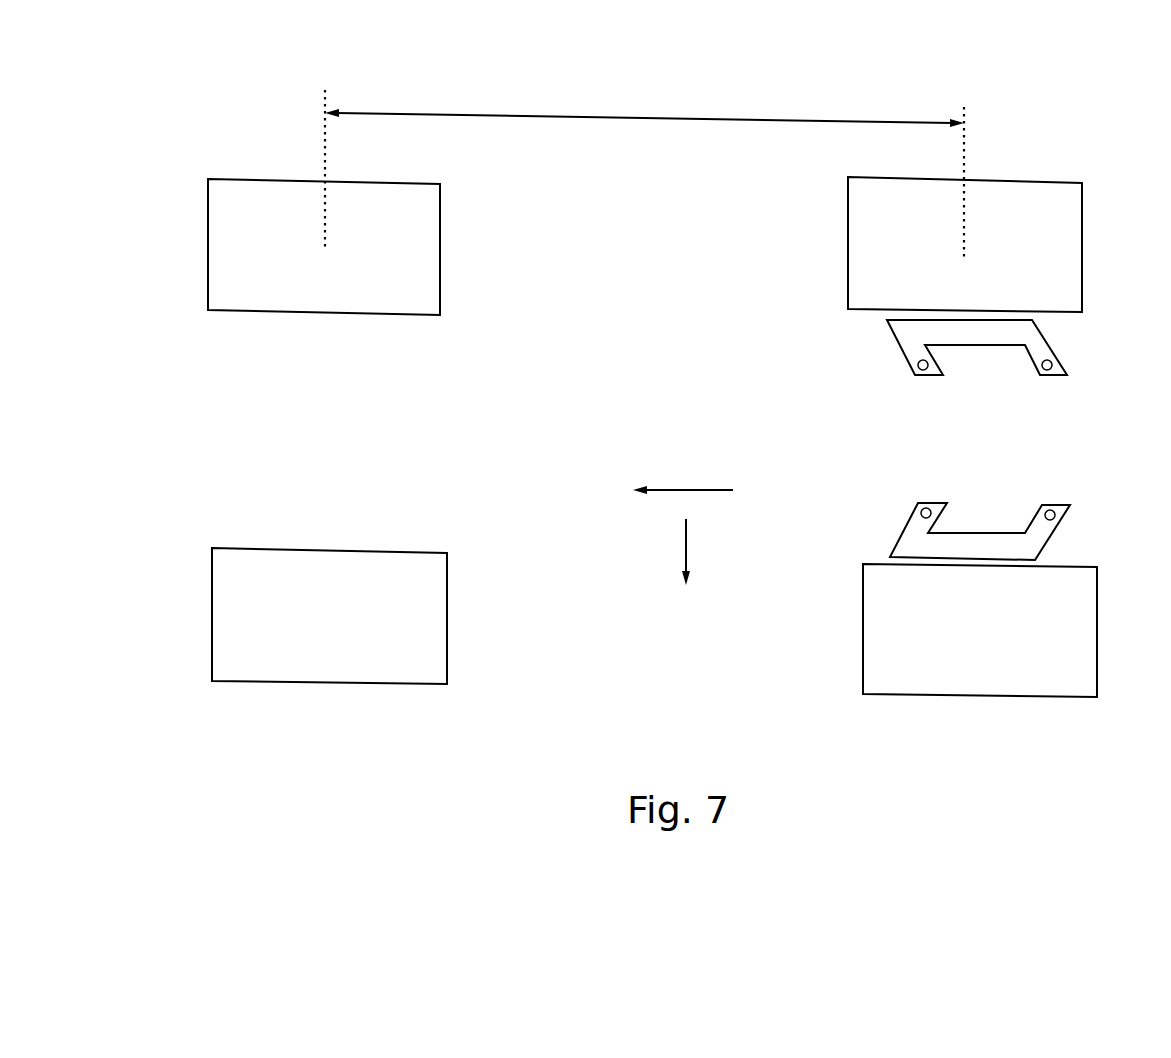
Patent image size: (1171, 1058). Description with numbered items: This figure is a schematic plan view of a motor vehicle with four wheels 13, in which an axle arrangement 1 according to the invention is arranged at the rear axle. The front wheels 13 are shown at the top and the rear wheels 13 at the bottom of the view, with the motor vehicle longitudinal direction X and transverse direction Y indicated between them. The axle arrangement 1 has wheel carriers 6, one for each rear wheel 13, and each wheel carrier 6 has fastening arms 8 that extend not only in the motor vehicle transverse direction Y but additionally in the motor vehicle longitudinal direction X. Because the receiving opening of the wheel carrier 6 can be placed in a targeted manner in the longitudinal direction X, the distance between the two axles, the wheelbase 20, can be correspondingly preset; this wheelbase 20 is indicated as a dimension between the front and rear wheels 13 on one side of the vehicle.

The axle arrangement 1 is at (1086, 146).
The wheel 13 is at (275, 278).
The wheel carrier 6 is at (973, 338).
The fastening arm 8 is at (1053, 375).
The wheelbase 20 is at (644, 173).